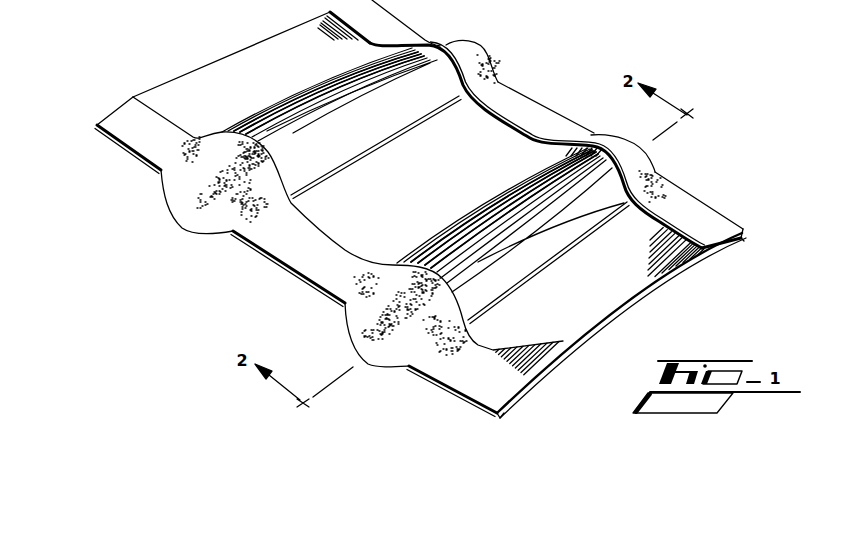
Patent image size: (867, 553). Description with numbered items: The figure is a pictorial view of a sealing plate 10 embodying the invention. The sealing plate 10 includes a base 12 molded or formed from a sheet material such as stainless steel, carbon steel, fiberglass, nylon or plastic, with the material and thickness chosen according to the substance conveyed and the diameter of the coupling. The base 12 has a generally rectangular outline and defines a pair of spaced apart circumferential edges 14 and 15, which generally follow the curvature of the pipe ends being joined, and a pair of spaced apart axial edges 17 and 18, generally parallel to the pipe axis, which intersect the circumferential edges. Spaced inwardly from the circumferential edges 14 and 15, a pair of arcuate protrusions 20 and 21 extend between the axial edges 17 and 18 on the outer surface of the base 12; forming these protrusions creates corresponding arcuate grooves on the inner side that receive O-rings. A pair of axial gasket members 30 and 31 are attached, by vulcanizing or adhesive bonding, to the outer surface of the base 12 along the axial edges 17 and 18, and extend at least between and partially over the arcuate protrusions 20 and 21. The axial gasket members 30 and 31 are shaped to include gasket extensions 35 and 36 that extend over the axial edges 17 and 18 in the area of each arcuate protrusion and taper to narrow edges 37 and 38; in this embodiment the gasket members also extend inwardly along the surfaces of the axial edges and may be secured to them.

The sealing plate 10 is at (131, 188).
The base 12 is at (477, 180).
The circumferential edge 14 is at (637, 295).
The circumferential edge 15 is at (197, 66).
The axial edge 17 is at (499, 416).
The axial edge 18 is at (747, 238).
The arcuate protrusion 20 is at (550, 230).
The arcuate protrusion 21 is at (367, 117).
The axial gasket member 30 is at (307, 253).
The axial gasket member 31 is at (519, 104).
The gasket extension 35 is at (220, 208).
The gasket extension 36 is at (629, 154).
The narrow edge 37 is at (177, 229).
The narrow edge 38 is at (483, 50).